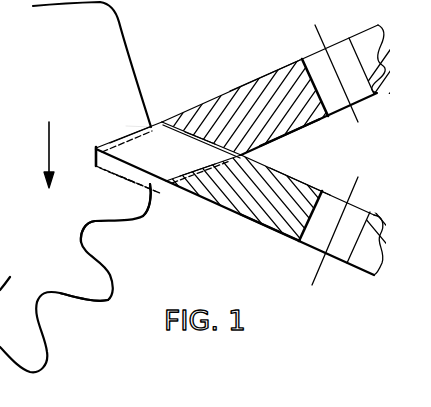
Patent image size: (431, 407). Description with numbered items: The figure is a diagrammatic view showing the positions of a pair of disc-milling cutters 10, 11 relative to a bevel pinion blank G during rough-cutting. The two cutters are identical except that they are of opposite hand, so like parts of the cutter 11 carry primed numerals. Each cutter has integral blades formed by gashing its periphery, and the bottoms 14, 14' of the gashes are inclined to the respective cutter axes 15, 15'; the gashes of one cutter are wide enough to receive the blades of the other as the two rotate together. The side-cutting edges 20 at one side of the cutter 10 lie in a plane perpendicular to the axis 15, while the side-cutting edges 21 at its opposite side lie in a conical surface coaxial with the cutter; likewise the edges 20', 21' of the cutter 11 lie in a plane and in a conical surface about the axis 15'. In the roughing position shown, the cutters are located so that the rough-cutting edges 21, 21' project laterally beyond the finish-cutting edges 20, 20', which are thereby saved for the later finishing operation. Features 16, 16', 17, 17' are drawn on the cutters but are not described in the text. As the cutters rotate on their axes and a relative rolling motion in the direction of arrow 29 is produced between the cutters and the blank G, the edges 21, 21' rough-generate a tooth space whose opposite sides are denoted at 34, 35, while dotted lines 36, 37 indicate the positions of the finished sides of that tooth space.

The bevel pinion blank G is at (129, 49).
The cutter 10 is at (263, 92).
The cutter 11 is at (265, 217).
The gash bottom 14 is at (201, 107).
The gash bottom 14' is at (198, 196).
The cutter axis 15 is at (338, 86).
The cutter axis 15' is at (325, 244).
The cutting edge of first insert 16 is at (290, 136).
The cutting edge of second insert 16' is at (302, 176).
The edge of first insert 17 is at (265, 61).
The edge of second insert 17' is at (270, 239).
The side-cutting edges 20 is at (235, 175).
The side-cutting edges 20' is at (200, 182).
The side-cutting edges 21 is at (135, 193).
The side-cutting edges 21' is at (121, 121).
The arrow 29 is at (49, 155).
The tooth space side 34 is at (158, 121).
The tooth space side 35 is at (160, 182).
The finished tooth space side 36 is at (124, 124).
The finished tooth space side 37 is at (128, 178).